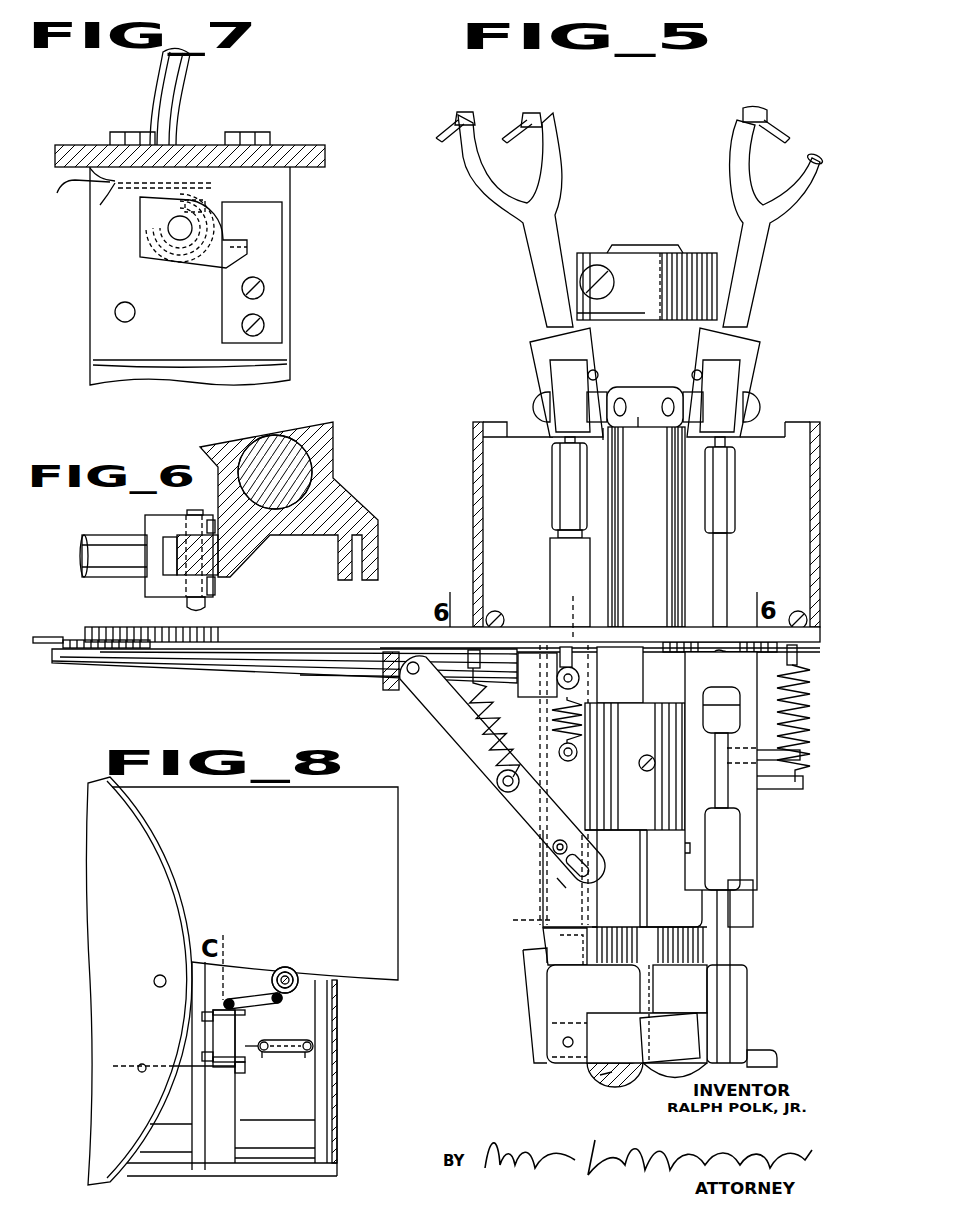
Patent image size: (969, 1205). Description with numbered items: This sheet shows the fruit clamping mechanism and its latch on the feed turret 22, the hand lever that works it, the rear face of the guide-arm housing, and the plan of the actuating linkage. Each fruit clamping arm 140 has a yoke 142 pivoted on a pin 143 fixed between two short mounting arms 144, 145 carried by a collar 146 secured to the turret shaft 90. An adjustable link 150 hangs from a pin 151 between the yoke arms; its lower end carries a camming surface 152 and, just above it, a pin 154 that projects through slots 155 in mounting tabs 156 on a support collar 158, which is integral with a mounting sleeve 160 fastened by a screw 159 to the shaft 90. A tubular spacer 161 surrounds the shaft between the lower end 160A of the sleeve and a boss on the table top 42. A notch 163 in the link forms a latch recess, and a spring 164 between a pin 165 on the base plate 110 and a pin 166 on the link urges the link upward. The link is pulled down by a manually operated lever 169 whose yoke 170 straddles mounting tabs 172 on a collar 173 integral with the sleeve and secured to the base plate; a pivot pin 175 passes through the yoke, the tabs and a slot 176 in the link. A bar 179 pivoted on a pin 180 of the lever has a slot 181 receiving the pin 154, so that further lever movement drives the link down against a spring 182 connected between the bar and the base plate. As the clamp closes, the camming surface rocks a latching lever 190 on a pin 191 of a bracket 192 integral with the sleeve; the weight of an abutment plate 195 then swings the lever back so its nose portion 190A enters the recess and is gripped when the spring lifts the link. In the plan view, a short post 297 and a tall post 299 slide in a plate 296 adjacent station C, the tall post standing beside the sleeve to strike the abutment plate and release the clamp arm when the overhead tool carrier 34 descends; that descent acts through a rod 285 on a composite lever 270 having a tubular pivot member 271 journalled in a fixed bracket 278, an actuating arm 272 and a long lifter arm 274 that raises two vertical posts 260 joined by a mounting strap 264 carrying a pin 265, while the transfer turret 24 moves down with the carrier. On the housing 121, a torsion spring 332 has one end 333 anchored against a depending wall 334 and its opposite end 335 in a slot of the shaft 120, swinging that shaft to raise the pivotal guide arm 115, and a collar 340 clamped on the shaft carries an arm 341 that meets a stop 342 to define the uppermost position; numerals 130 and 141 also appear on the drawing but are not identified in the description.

In FIG. 7, the feed turret 22 is at (281, 144).
In FIG. 8, the feed turret 22 is at (287, 966).
In FIG. 5, the feed turret 22 is at (398, 626).
In FIG. 8, the transfer turret 24 is at (160, 970).
In FIG. 8, the overhead tool carrier 34 is at (145, 834).
In FIG. 8, the table top 42 is at (339, 869).
In FIG. 6, the turret shaft 90 is at (293, 458).
In FIG. 8, the turret shaft 90 is at (293, 973).
In FIG. 5, the turret shaft 90 is at (660, 529).
In FIG. 7, the base plate 110 is at (82, 143).
In FIG. 5, the base plate 110 is at (283, 628).
In FIG. 7, the guide arm 115 is at (167, 77).
In FIG. 7, the shaft 120 is at (175, 233).
In FIG. 7, the housing 121 is at (180, 351).
In FIG. 7, the hole 130 is at (115, 313).
In FIG. 5, the fruit clamping arm 140 is at (740, 238).
In FIG. 5, the pin 141 is at (517, 133).
In FIG. 5, the yoke 142 is at (540, 353).
In FIG. 5, the pin 143 is at (667, 398).
In FIG. 5, the mounting arm 144 is at (540, 400).
In FIG. 5, the mounting arm 145 is at (603, 432).
In FIG. 5, the collar 146 is at (640, 425).
In FIG. 6, the adjustable link 150 is at (180, 555).
In FIG. 5, the adjustable link 150 is at (563, 549).
In FIG. 5, the pin 151 is at (593, 370).
In FIG. 5, the camming surface 152 is at (543, 940).
In FIG. 5, the pin 154 is at (553, 847).
In FIG. 5, the slot 155 is at (570, 890).
In FIG. 5, the mounting tab 156 is at (567, 907).
In FIG. 5, the support collar 158 is at (682, 886).
In FIG. 5, the screw 159 is at (633, 760).
In FIG. 8, the mounting sleeve 160 is at (297, 982).
In FIG. 5, the mounting sleeve 160 is at (655, 824).
In FIG. 5, the lower end of sleeve 160A is at (653, 1013).
In FIG. 5, the tubular spacer 161 is at (600, 1078).
In FIG. 5, the notch 163 is at (511, 922).
In FIG. 5, the spring 164 is at (553, 725).
In FIG. 5, the pin 165 is at (574, 652).
In FIG. 5, the pin 166 is at (567, 762).
In FIG. 6, the manually operated lever 169 is at (83, 547).
In FIG. 5, the manually operated lever 169 is at (240, 662).
In FIG. 6, the yoke 170 is at (157, 525).
In FIG. 5, the yoke 170 is at (530, 652).
In FIG. 6, the mounting tab 172 is at (340, 563).
In FIG. 6, the collar 173 is at (227, 457).
In FIG. 5, the collar 173 is at (627, 698).
In FIG. 6, the pivot pin 175 is at (200, 510).
In FIG. 5, the pivot pin 175 is at (575, 680).
In FIG. 6, the slot 176 is at (197, 563).
In FIG. 5, the slot 176 is at (569, 748).
In FIG. 5, the bar 179 is at (440, 718).
In FIG. 5, the pin 180 is at (403, 672).
In FIG. 5, the slot 181 is at (590, 862).
In FIG. 5, the spring 182 is at (483, 742).
In FIG. 5, the latching lever 190 is at (533, 1027).
In FIG. 5, the nose portion 190A is at (540, 952).
In FIG. 5, the pin 191 is at (563, 1044).
In FIG. 5, the bracket 192 is at (637, 997).
In FIG. 5, the abutment plate 195 is at (687, 1051).
In FIG. 8, the vertical post 260 is at (307, 1053).
In FIG. 8, the mounting strap 264 is at (298, 1040).
In FIG. 8, the pin 265 is at (280, 1038).
In FIG. 8, the composite lever 270 is at (196, 1082).
In FIG. 8, the tubular pivot member 271 is at (239, 1030).
In FIG. 8, the actuating arm 272 is at (189, 1062).
In FIG. 8, the long lifter arm 274 is at (283, 1081).
In FIG. 8, the fixed bracket 278 is at (228, 1130).
In FIG. 8, the rod 285 is at (140, 1072).
In FIG. 8, the plate 296 is at (250, 992).
In FIG. 8, the short post 297 is at (224, 1006).
In FIG. 8, the tall post 299 is at (290, 998).
In FIG. 7, the torsion spring 332 is at (112, 192).
In FIG. 7, the spring end 333 is at (87, 182).
In FIG. 7, the depending wall 334 is at (115, 175).
In FIG. 7, the spring end 335 is at (213, 200).
In FIG. 7, the collar 340 is at (150, 230).
In FIG. 7, the arm 341 is at (230, 247).
In FIG. 7, the stop 342 is at (238, 227).